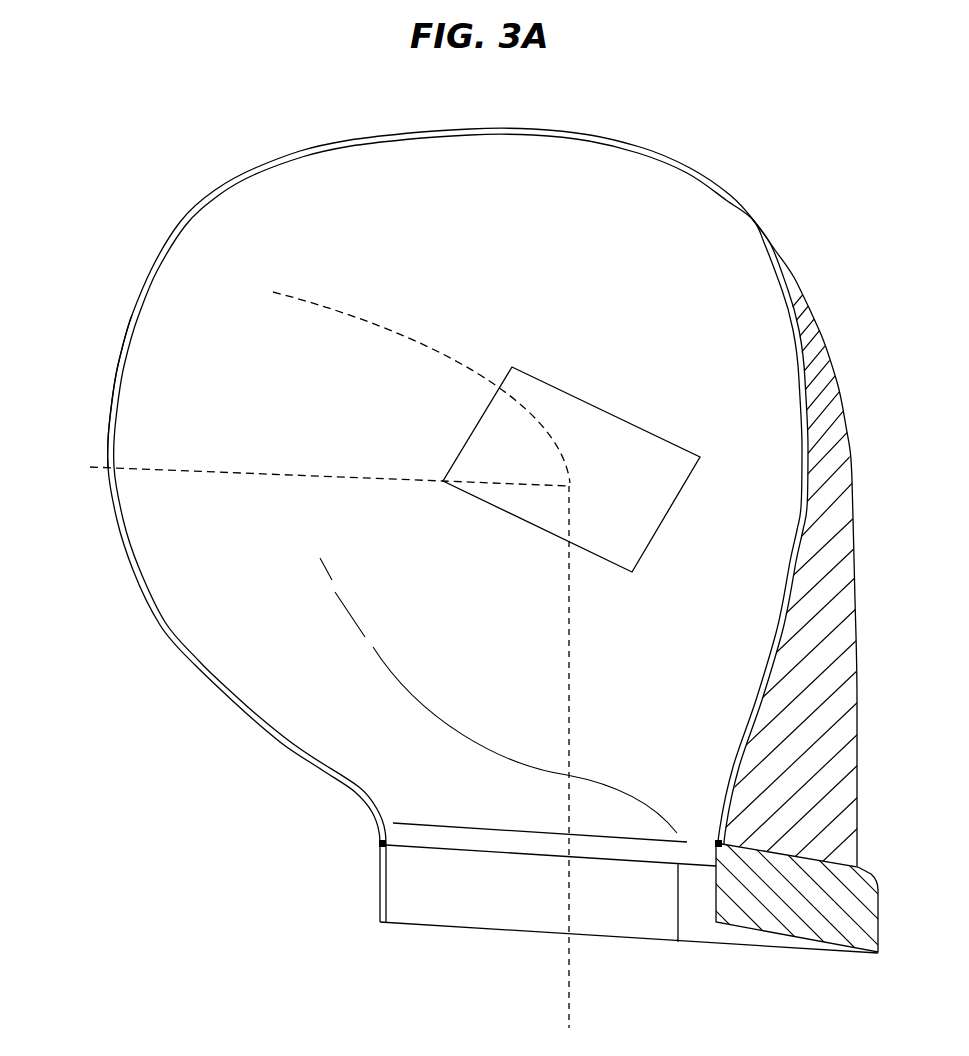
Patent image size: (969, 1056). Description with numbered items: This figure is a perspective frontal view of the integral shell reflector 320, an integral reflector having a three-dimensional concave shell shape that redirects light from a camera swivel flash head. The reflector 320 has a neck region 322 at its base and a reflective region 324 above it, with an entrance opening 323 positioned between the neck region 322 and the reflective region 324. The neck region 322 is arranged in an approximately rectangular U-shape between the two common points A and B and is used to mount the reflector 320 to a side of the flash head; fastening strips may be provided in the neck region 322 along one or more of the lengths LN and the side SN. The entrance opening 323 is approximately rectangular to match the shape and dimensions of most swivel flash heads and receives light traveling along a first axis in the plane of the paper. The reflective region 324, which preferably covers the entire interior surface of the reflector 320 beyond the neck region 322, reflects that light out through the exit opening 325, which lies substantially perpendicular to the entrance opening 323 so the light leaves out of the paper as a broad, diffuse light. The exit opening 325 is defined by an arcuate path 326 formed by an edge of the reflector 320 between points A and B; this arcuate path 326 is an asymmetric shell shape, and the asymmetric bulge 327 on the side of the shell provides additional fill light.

The integral shell reflector 320 is at (410, 137).
The neck region 322 is at (830, 921).
The entrance opening 323 is at (501, 840).
The reflective region 324 is at (634, 416).
The exit opening 325 is at (262, 197).
The arcuate path 326 is at (280, 744).
The asymmetric bulge 327 is at (127, 322).
The length of neck region LN is at (765, 932).
The side of neck region SN is at (803, 952).